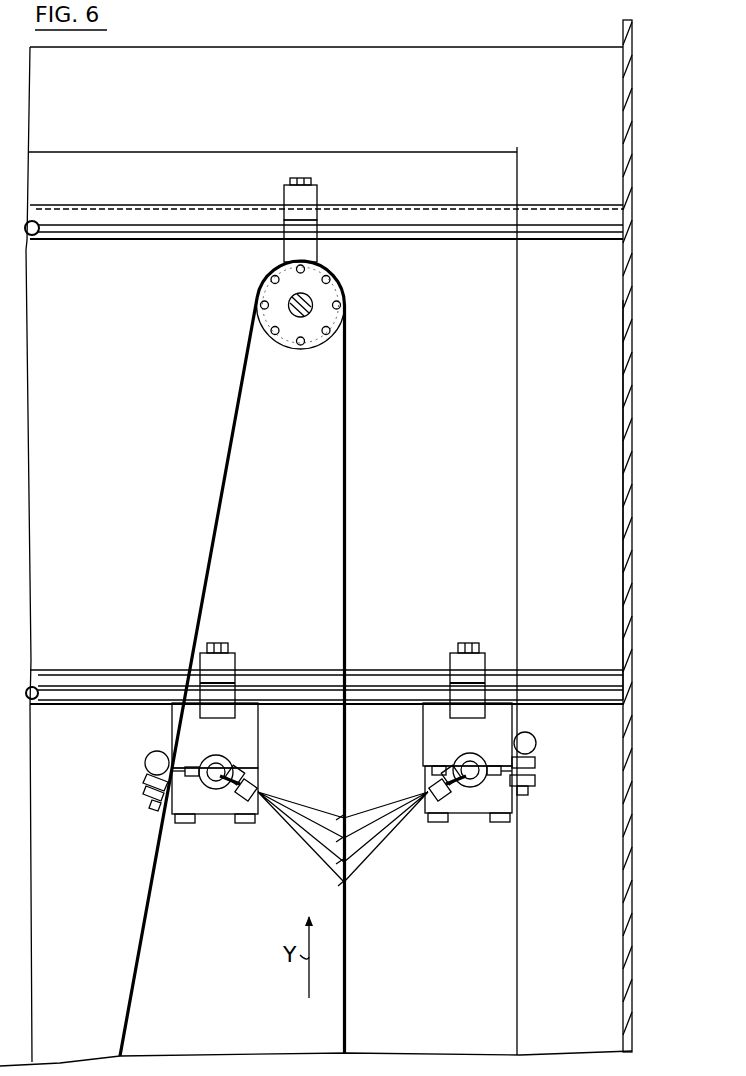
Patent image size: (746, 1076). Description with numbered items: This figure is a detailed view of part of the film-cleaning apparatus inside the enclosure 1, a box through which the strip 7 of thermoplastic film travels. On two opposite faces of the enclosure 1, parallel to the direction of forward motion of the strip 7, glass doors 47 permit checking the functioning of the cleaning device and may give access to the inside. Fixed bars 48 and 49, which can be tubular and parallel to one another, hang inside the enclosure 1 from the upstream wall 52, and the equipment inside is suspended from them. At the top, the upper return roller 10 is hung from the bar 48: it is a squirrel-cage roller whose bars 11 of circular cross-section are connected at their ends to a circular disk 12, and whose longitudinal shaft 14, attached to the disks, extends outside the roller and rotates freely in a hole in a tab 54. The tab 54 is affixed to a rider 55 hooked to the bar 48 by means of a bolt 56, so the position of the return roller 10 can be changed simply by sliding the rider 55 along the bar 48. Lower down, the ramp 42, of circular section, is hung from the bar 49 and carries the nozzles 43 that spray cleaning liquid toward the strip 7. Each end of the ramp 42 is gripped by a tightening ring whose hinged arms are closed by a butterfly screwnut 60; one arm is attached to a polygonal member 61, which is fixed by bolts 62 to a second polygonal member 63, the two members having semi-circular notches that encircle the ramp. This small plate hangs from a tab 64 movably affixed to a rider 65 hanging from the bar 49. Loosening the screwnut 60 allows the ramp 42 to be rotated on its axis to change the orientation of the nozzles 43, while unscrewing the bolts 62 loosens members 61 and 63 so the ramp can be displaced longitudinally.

The enclosure 1 is at (635, 196).
The strip of thermoplastic film 7 is at (122, 1018).
The upper return roller 10 is at (301, 339).
The bars 11 is at (266, 285).
The circular disk 12 is at (272, 317).
The longitudinal shaft 14 is at (318, 308).
The ramp 42 is at (230, 762).
The nozzle 43 is at (258, 790).
The glass door 47 is at (438, 152).
The fixed bar 48 is at (560, 210).
The fixed bar 49 is at (567, 680).
The upstream wall 52 is at (622, 520).
The tab 54 is at (318, 247).
The rider 55 is at (300, 200).
The bolt 56 is at (297, 178).
The butterfly screwnut 60 is at (155, 762).
The polygonal member 61 is at (218, 805).
The bolt 62 is at (185, 823).
The second polygonal member 63 is at (258, 722).
The tab 64 is at (232, 698).
The rider 65 is at (228, 660).